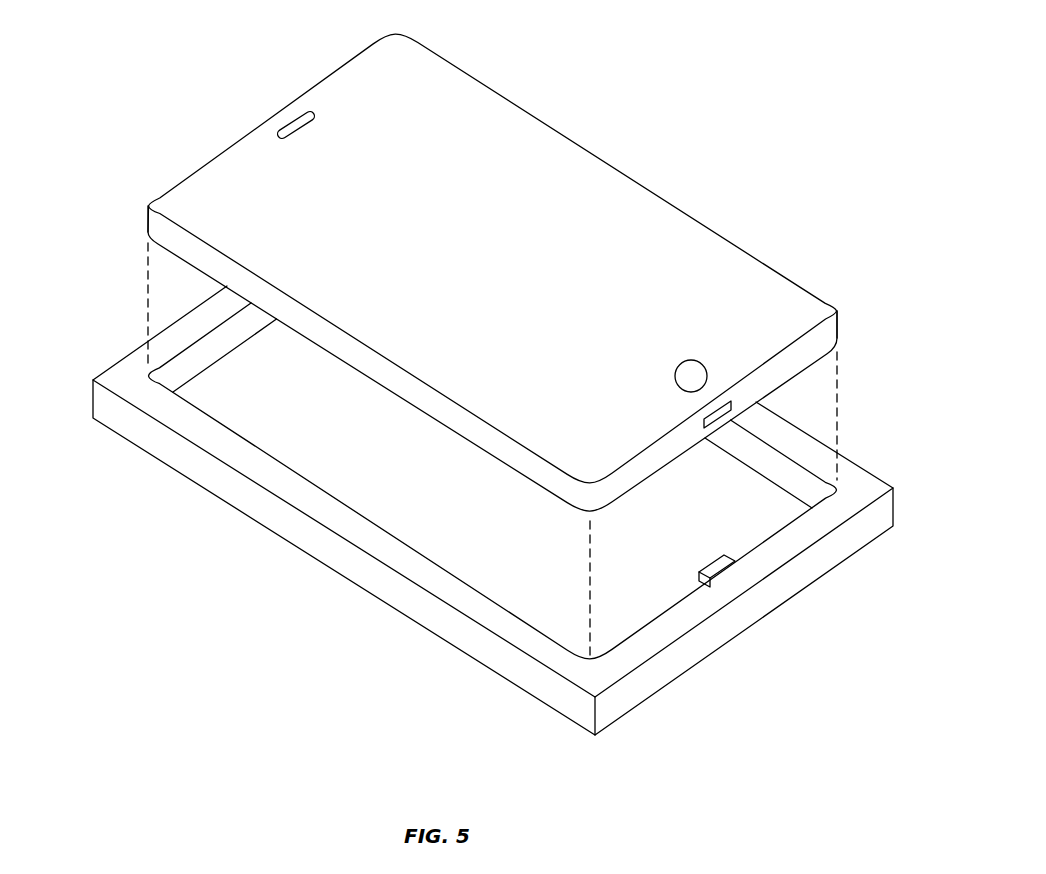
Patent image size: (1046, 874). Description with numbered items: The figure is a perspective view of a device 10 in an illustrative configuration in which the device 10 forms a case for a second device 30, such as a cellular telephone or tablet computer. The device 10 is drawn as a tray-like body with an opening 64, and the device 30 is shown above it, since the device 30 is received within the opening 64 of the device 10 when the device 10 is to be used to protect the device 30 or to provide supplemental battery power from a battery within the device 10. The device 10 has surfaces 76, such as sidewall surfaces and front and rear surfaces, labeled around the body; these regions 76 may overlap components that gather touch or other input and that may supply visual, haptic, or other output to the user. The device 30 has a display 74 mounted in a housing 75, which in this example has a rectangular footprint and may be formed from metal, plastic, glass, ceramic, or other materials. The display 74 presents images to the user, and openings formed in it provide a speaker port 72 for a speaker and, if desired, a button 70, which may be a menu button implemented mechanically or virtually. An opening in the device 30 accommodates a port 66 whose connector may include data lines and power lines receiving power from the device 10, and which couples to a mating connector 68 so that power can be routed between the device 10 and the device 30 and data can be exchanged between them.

The device 10 is at (526, 668).
The device 30 is at (660, 193).
The opening 64 is at (472, 534).
The port 66 is at (729, 407).
The connector 68 is at (731, 552).
The button 70 is at (696, 359).
The speaker port 72 is at (294, 116).
The display 74 is at (521, 152).
The housing 75 is at (826, 336).
The surfaces 76 is at (114, 352).